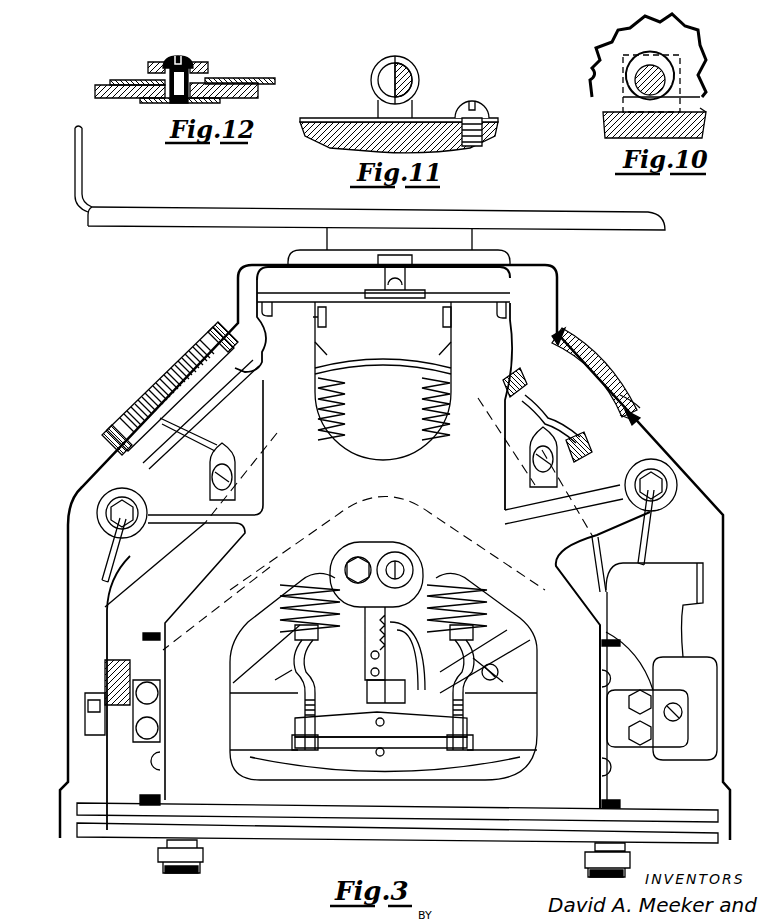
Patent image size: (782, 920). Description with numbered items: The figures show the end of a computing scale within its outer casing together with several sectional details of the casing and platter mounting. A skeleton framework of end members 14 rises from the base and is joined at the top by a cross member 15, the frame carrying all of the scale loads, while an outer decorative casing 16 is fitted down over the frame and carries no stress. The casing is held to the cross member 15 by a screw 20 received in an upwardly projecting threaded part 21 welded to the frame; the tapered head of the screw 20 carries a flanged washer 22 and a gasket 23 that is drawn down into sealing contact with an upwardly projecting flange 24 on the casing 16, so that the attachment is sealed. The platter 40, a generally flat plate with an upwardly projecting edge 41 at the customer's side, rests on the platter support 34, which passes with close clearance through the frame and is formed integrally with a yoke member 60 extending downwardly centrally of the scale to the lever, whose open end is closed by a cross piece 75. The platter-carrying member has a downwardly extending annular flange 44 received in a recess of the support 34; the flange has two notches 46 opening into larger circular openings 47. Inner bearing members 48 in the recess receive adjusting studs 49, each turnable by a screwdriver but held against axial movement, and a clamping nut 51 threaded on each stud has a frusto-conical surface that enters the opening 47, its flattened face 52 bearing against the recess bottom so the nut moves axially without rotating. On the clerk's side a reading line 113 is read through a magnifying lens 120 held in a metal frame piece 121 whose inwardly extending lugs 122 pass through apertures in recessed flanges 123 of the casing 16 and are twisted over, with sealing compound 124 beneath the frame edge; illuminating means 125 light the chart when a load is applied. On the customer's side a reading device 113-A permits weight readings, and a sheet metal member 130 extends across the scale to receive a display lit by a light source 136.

In FIG. 3, the end member 14 is at (172, 772).
In FIG. 12, the cross member 15 is at (113, 98).
In FIG. 3, the cross member 15 is at (500, 292).
In FIG. 12, the casing 16 is at (130, 80).
In FIG. 3, the casing 16 is at (684, 473).
In FIG. 12, the screw 20 is at (177, 58).
In FIG. 12, the threaded part 21 is at (163, 100).
In FIG. 12, the flanged washer 22 is at (196, 64).
In FIG. 12, the gasket 23 is at (206, 67).
In FIG. 12, the flange 24 is at (210, 79).
In FIG. 10, the platter support 34 is at (612, 125).
In FIG. 3, the platter 40 is at (140, 216).
In FIG. 3, the upwardly projecting edge 41 is at (74, 164).
In FIG. 10, the annular flange 44 is at (608, 62).
In FIG. 10, the notch 46 is at (625, 97).
In FIG. 10, the circular opening 47 is at (658, 62).
In FIG. 11, the bearing member 48 is at (410, 104).
In FIG. 11, the adjusting stud 49 is at (400, 62).
In FIG. 10, the adjusting stud 49 is at (670, 84).
In FIG. 10, the clamping nut 51 is at (612, 100).
In FIG. 10, the flattened face 52 is at (690, 108).
In FIG. 3, the yoke member 60 is at (277, 433).
In FIG. 3, the cross piece 75 is at (258, 725).
In FIG. 3, the reading line 113 is at (548, 428).
In FIG. 3, the reading device 113-A is at (187, 420).
In FIG. 3, the magnifying lens 120 is at (607, 357).
In FIG. 3, the frame piece 121 is at (562, 330).
In FIG. 3, the lug 122 is at (624, 414).
In FIG. 3, the recessed flange 123 is at (623, 392).
In FIG. 3, the sealing compound 124 is at (636, 414).
In FIG. 3, the illuminating means 125 is at (670, 463).
In FIG. 3, the sheet metal member 130 is at (175, 368).
In FIG. 3, the light source 136 is at (110, 493).